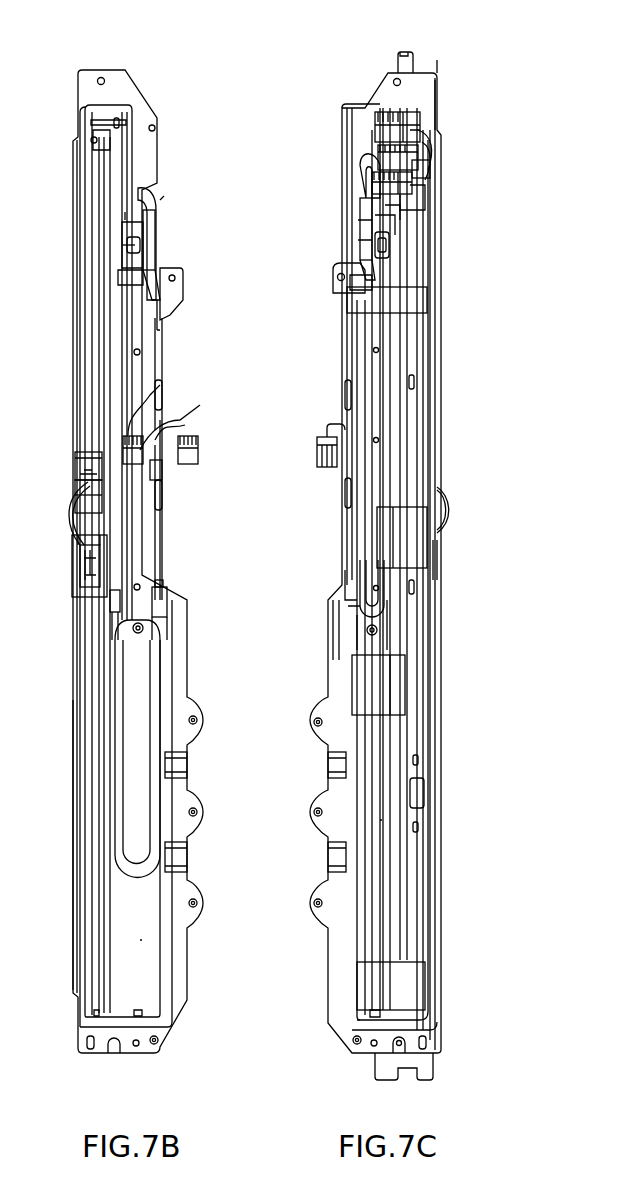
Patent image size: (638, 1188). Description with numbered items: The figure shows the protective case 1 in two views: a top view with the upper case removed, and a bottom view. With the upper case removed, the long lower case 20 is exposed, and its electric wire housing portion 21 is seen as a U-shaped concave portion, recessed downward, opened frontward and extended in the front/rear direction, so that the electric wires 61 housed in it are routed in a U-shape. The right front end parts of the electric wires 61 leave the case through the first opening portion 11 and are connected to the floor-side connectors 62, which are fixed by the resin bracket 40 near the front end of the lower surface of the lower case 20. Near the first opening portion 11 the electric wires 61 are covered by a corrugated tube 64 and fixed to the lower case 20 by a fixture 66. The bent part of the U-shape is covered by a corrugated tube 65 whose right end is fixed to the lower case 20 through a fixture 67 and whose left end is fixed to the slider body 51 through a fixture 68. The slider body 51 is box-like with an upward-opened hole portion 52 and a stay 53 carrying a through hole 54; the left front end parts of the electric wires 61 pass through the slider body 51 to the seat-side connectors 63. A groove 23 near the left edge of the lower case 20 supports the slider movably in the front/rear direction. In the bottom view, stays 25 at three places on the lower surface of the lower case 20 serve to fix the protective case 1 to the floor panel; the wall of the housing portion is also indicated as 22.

In FIG. 7C, the protective case 1 is at (446, 60).
In FIG. 7C, the first opening portion 11 is at (340, 268).
In FIG. 7B, the lower case 20 is at (148, 108).
In FIG. 7C, the lower case 20 is at (443, 165).
In FIG. 7B, the electric wire housing portion 21 is at (115, 350).
In FIG. 7C, the electric wire housing portion 21 is at (357, 365).
In FIG. 7B, the frame wall 22 is at (145, 940).
In FIG. 7C, the frame wall 22 is at (383, 820).
In FIG. 7B, the groove 23 is at (88, 898).
In FIG. 7C, the stays 25 is at (400, 298).
In FIG. 7C, the bracket 40 is at (441, 115).
In FIG. 7B, the slider body 51 is at (72, 577).
In FIG. 7B, the hole portion 52 is at (84, 563).
In FIG. 7B, the stay 53 is at (85, 495).
In FIG. 7B, the through hole 54 is at (85, 472).
In FIG. 7B, the electric wires 61 is at (155, 440).
In FIG. 7C, the electric wires 61 is at (447, 500).
In FIG. 7C, the floor-side connectors 62 is at (372, 180).
In FIG. 7B, the seat-side connectors 63 is at (188, 465).
In FIG. 7C, the seat-side connectors 63 is at (325, 468).
In FIG. 7B, the corrugated tube 64 is at (158, 203).
In FIG. 7C, the corrugated tube 64 is at (370, 198).
In FIG. 7B, the corrugated tube 65 is at (160, 738).
In FIG. 7B, the fixture 66 is at (156, 226).
In FIG. 7C, the fixture 66 is at (362, 228).
In FIG. 7B, the fixture 67 is at (168, 603).
In FIG. 7B, the fixture 68 is at (114, 612).